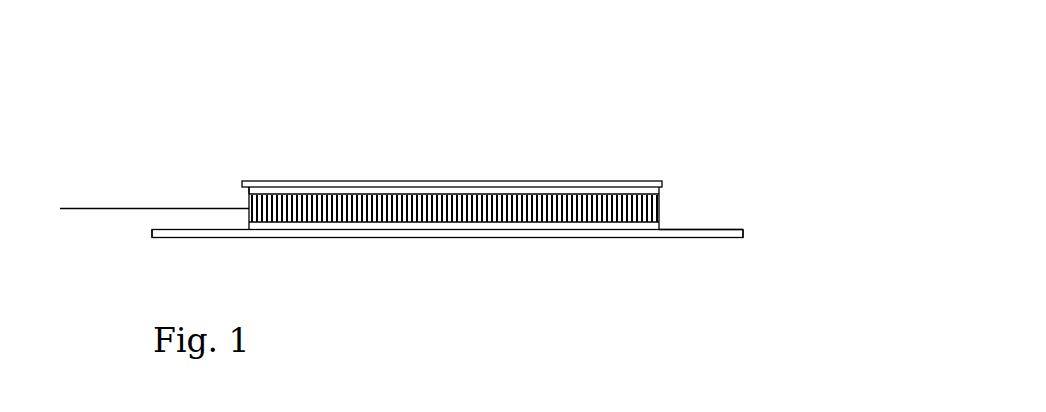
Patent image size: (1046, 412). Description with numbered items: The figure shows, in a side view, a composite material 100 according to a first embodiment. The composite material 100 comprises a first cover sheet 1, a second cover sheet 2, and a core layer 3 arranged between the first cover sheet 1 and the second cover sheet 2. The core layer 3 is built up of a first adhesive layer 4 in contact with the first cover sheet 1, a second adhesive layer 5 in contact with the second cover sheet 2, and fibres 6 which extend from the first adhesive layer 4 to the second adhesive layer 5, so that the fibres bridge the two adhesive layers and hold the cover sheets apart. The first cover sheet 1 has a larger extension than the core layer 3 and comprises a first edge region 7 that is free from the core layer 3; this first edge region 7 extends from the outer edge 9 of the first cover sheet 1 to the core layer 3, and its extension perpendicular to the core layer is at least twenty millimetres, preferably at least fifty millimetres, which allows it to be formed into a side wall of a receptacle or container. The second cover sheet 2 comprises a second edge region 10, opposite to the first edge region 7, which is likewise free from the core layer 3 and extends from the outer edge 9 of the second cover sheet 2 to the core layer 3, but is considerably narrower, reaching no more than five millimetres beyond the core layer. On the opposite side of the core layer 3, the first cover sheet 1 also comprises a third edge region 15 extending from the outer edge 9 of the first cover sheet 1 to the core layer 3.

The composite material 100 is at (806, 79).
The first cover sheet 1 is at (567, 233).
The second cover sheet 2 is at (623, 188).
The core layer 3 is at (696, 191).
The first adhesive layer 4 is at (422, 225).
The second adhesive layer 5 is at (333, 196).
The fibres 6 is at (137, 207).
The first edge region 7 is at (165, 229).
The outer edge 9 is at (743, 232).
The second edge region 10 is at (247, 191).
The third edge region 15 is at (723, 230).